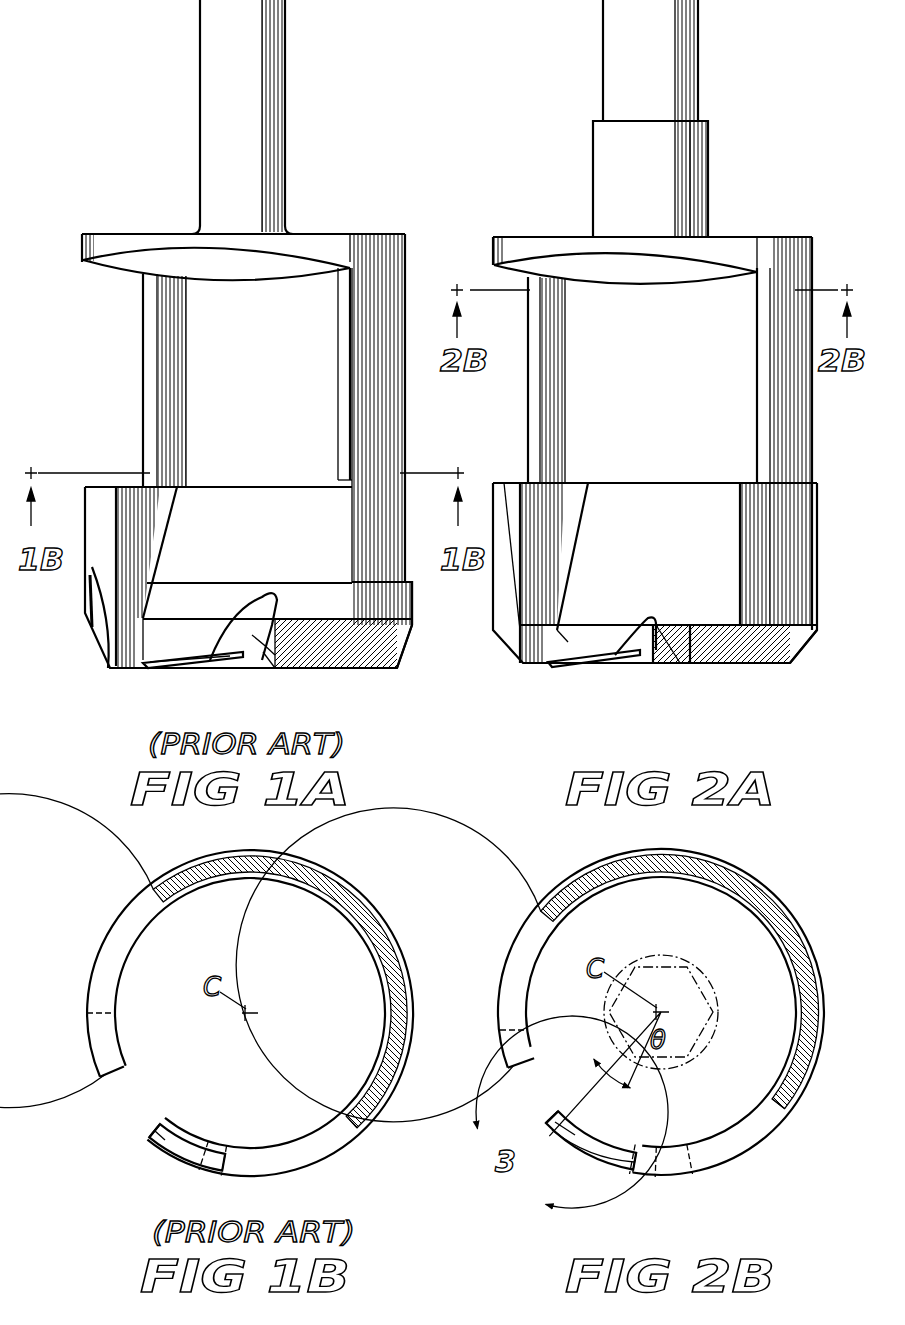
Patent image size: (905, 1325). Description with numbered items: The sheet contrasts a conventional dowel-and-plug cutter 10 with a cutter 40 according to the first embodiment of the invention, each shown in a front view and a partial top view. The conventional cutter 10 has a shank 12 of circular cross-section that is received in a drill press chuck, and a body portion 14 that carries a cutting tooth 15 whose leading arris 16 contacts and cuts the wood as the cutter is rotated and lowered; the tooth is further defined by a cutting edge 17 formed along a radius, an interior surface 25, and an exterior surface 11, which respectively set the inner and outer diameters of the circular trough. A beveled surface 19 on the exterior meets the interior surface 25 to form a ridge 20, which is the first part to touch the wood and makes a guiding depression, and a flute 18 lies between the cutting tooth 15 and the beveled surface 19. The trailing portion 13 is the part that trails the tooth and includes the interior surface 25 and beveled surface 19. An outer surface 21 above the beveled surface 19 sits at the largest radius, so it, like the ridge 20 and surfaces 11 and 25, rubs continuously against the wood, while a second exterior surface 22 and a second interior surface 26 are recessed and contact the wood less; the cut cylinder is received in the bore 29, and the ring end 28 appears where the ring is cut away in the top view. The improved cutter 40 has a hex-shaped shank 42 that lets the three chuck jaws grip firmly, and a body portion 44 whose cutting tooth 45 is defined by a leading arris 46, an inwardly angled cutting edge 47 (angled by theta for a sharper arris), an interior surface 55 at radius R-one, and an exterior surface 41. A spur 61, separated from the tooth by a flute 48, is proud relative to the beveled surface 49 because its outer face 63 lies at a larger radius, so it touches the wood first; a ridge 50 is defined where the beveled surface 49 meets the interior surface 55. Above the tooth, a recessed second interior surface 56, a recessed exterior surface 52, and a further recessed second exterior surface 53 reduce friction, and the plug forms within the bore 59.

In FIG. 1A, the conventional cutter 10 is at (115, 50).
In FIG. 1B, the conventional cutter 10 is at (108, 888).
In FIG. 1A, the exterior surface 11 is at (167, 663).
In FIG. 1A, the shank 12 is at (275, 94).
In FIG. 1A, the trailing portion 13 is at (282, 673).
In FIG. 1A, the body portion 14 is at (82, 248).
In FIG. 1A, the cutting tooth 15 is at (178, 669).
In FIG. 1B, the cutting tooth 15 is at (170, 1161).
In FIG. 1B, the leading arris 16 is at (147, 1136).
In FIG. 1B, the cutting edge 17 is at (150, 1123).
In FIG. 1A, the flute 18 is at (276, 606).
In FIG. 1A, the beveled surface 19 is at (395, 653).
In FIG. 1A, the ridge 20 is at (306, 671).
In FIG. 1A, the outer surface 21 is at (406, 602).
In FIG. 1B, the outer surface 21 is at (340, 1144).
In FIG. 1A, the second exterior surface 22 is at (393, 518).
In FIG. 1A, the interior surface 25 is at (125, 667).
In FIG. 1B, the interior surface 25 is at (346, 1116).
In FIG. 1A, the second interior surface 26 is at (128, 570).
In FIG. 1B, the ring end 28 is at (118, 1077).
In FIG. 1A, the bore 29 is at (210, 362).
In FIG. 1B, the bore 29 is at (264, 955).
In FIG. 2A, the cutter 40 is at (522, 45).
In FIG. 2B, the cutter 40 is at (540, 882).
In FIG. 2A, the exterior surface 41 is at (565, 641).
In FIG. 2A, the shank 42 is at (688, 94).
In FIG. 2B, the shank 42 is at (702, 979).
In FIG. 2A, the body portion 44 is at (812, 243).
In FIG. 2A, the cutting tooth 45 is at (580, 664).
In FIG. 2B, the cutting tooth 45 is at (596, 1168).
In FIG. 2B, the leading arris 46 is at (548, 1130).
In FIG. 2B, the cutting edge 47 is at (552, 1122).
In FIG. 2A, the flute 48 is at (670, 619).
In FIG. 2A, the beveled surface 49 is at (800, 653).
In FIG. 2A, the ridge 50 is at (760, 669).
In FIG. 2A, the exterior surface 52 is at (795, 555).
In FIG. 2B, the exterior surface 52 is at (752, 1151).
In FIG. 2A, the second exterior surface 53 is at (813, 454).
In FIG. 2B, the second exterior surface 53 is at (790, 1115).
In FIG. 2A, the interior surface 55 is at (533, 669).
In FIG. 2B, the interior surface 55 is at (760, 1108).
In FIG. 2A, the second interior surface 56 is at (556, 439).
In FIG. 2A, the bore 59 is at (600, 406).
In FIG. 2B, the bore 59 is at (673, 941).
In FIG. 2A, the spur 61 is at (680, 666).
In FIG. 2B, the spur 61 is at (682, 1173).
In FIG. 2A, the outer face 63 is at (678, 641).